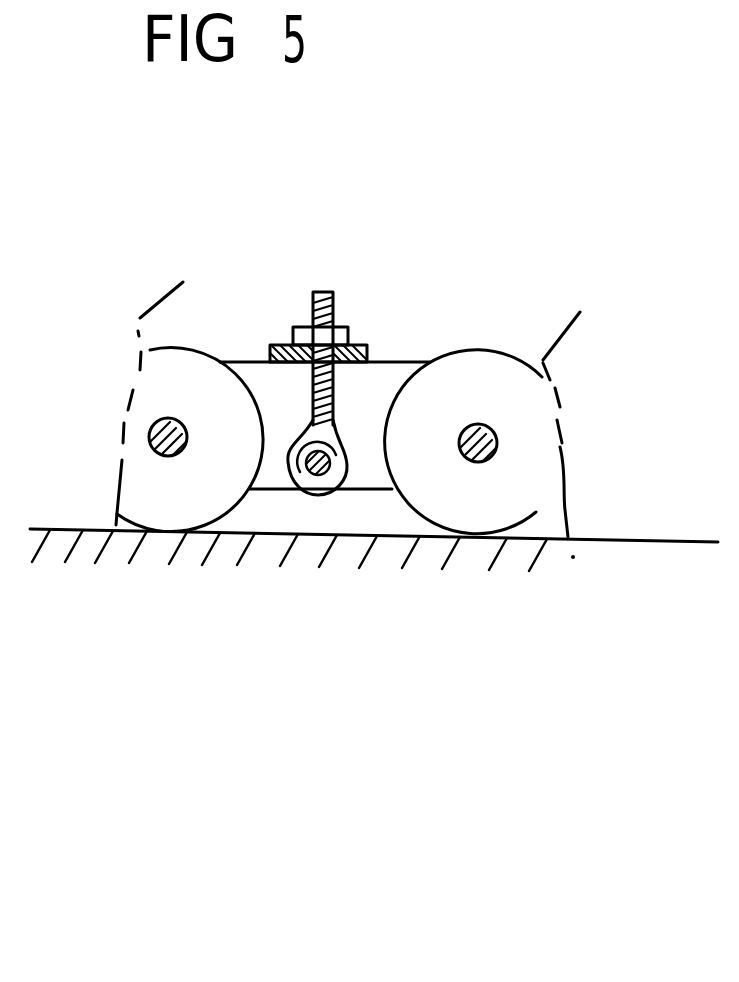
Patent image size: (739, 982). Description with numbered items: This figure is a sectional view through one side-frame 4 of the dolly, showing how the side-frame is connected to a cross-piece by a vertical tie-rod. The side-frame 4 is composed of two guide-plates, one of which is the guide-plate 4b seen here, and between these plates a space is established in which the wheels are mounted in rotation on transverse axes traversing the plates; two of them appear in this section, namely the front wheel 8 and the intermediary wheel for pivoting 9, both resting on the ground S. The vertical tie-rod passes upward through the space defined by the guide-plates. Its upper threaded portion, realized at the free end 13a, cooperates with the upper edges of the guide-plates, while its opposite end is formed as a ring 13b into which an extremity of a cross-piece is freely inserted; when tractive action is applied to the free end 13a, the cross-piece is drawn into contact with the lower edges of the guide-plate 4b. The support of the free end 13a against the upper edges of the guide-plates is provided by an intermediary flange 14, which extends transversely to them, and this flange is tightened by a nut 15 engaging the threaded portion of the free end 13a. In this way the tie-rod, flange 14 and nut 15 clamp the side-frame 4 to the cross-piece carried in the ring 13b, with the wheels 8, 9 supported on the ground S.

The side-frame 4 is at (487, 297).
The guide-plate 4b is at (372, 403).
The front wheel 8 is at (503, 490).
The intermediary wheel for pivoting 9 is at (193, 495).
The free end of tie-rod 13a is at (310, 292).
The ring-shaped portion of tie-rod 13b is at (322, 478).
The intermediary flange 14 is at (366, 336).
The nut 15 is at (288, 328).
The ground S is at (632, 562).